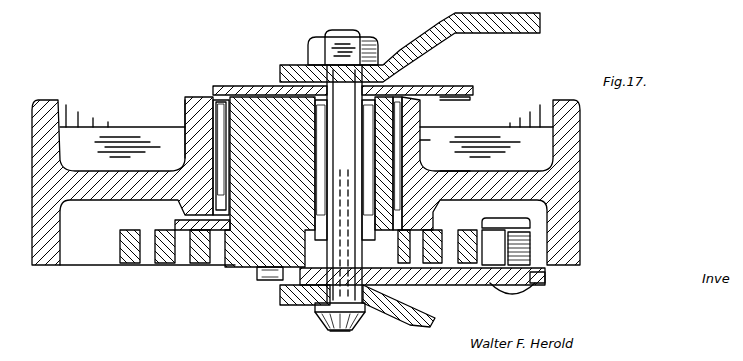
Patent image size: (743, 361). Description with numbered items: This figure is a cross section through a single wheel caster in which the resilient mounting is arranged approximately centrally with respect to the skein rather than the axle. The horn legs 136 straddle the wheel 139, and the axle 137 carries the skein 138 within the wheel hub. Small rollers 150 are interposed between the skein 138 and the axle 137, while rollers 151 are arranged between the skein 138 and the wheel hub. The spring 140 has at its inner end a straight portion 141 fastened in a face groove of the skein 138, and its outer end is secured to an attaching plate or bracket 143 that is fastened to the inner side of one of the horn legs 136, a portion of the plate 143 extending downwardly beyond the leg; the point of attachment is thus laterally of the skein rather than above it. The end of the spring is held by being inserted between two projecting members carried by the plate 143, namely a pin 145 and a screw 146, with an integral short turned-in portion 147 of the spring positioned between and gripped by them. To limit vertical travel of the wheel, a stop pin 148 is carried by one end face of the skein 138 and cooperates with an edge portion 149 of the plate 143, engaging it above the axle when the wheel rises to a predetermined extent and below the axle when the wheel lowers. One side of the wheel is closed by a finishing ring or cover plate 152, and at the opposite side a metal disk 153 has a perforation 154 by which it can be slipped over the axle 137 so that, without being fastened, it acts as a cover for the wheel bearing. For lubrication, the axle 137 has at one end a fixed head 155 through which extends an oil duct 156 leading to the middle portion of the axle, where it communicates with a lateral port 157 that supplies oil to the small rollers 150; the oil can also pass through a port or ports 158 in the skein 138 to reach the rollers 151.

The horn legs 136 is at (540, 24).
The axle 137 is at (398, 112).
The skein 138 is at (248, 96).
The wheel 139 is at (565, 137).
The spring 140 is at (165, 263).
The straight portion 141 is at (240, 267).
The attaching plate or bracket 143 is at (432, 285).
The pin 145 is at (510, 222).
The screw 146 is at (520, 250).
The turned-in portion 147 is at (485, 240).
The stop pin 148 is at (262, 282).
The edge portion 149 is at (292, 303).
The small rollers 150 is at (272, 125).
The rollers 151 is at (220, 130).
The finishing ring or cover plate 152 is at (210, 265).
The metal disk 153 is at (462, 88).
The perforation 154 is at (398, 93).
The fixed head 155 is at (328, 330).
The oil duct 156 is at (345, 330).
The lateral port 157 is at (428, 158).
The port or ports 158 is at (432, 166).